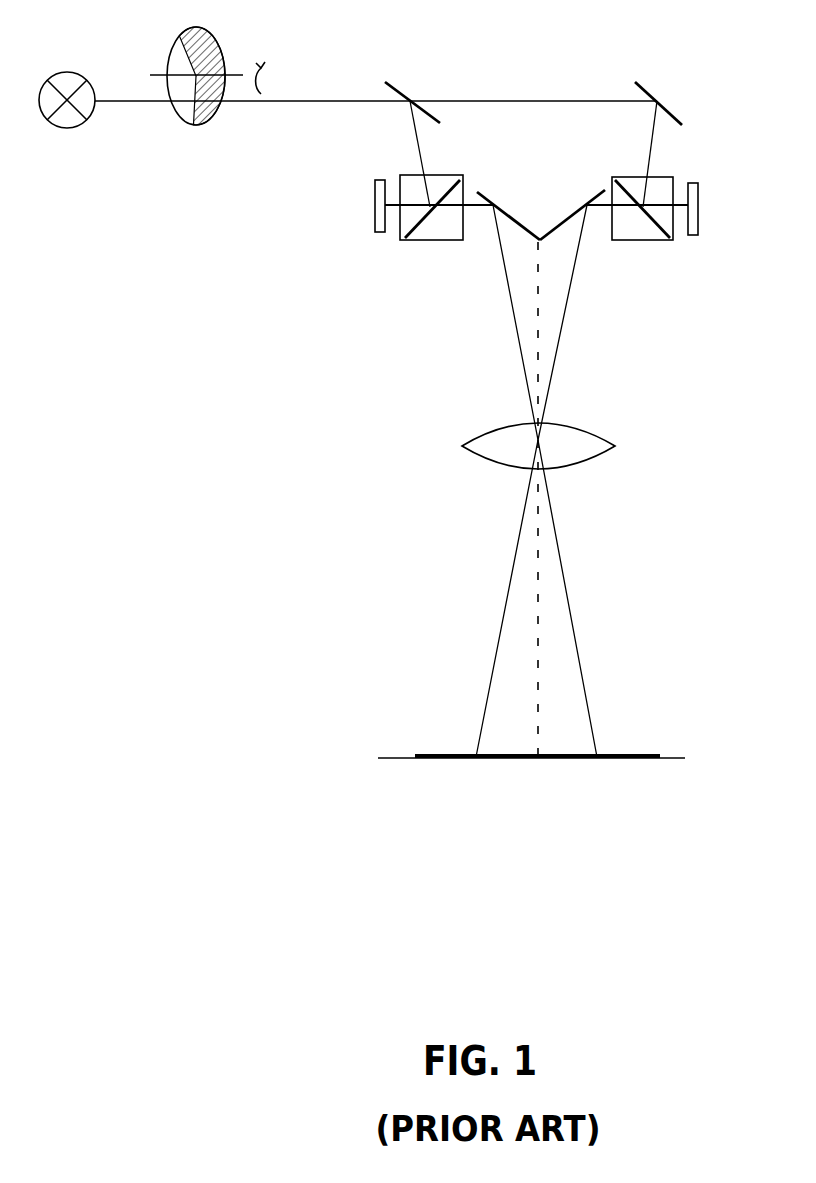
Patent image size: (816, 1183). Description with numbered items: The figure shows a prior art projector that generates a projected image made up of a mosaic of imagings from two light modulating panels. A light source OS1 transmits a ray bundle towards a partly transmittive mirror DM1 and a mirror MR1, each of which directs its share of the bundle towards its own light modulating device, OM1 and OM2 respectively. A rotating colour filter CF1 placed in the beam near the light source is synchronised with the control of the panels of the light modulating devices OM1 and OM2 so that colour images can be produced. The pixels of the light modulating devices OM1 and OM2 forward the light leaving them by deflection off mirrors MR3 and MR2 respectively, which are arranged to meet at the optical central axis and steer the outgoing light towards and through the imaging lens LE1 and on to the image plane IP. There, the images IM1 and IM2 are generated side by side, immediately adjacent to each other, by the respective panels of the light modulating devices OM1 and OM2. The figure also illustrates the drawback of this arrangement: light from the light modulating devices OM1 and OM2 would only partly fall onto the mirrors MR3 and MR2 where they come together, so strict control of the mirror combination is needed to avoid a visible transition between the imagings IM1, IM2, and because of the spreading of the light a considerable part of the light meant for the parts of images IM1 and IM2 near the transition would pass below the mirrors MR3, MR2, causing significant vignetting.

The light source OS1 is at (74, 83).
The rotating colour filter CF1 is at (208, 69).
The partly transmittive mirror DM1 is at (421, 133).
The mirror MR1 is at (670, 132).
The light modulating device OM1 is at (419, 191).
The light modulating device OM2 is at (657, 193).
The mirror MR3 is at (508, 460).
The mirror MR2 is at (571, 459).
The imaging lens LE1 is at (561, 435).
The image plane IP is at (542, 748).
The image IM2 is at (476, 781).
The image IM1 is at (599, 781).